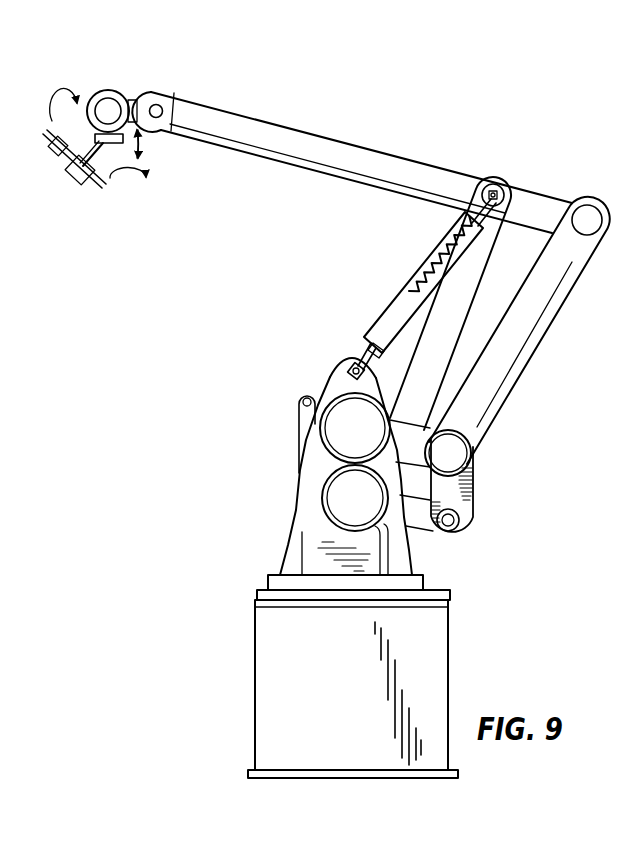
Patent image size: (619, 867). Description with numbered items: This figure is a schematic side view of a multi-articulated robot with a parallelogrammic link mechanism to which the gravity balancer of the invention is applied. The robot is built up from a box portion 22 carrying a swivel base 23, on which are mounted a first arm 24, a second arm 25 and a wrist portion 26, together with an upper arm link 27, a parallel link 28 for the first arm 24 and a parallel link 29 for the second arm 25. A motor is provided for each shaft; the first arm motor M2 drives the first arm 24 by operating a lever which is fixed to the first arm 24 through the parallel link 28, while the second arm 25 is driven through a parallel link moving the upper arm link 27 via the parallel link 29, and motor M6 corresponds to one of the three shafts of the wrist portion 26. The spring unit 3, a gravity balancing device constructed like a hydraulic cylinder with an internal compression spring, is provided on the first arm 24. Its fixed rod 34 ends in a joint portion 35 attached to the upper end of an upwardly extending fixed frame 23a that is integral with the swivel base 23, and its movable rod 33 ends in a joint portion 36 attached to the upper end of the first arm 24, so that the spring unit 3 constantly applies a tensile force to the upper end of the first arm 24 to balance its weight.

The spring unit 3 is at (403, 275).
The box portion 22 is at (437, 677).
The swivel base 23 is at (412, 587).
The fixed frame 23a is at (337, 390).
The first arm 24 is at (415, 332).
The second arm 25 is at (360, 152).
The wrist portion 26 is at (141, 82).
The upper arm link 27 is at (537, 315).
The parallel link for the first arm 28 is at (300, 440).
The parallel link for the second arm 29 is at (458, 500).
The movable rod 33 is at (481, 221).
The fixed rod 34 is at (376, 358).
The joint portion of the fixed rod 35 is at (352, 366).
The joint portion of the movable rod 36 is at (508, 193).
The first arm motor M2 is at (333, 497).
The motor M6 is at (335, 425).